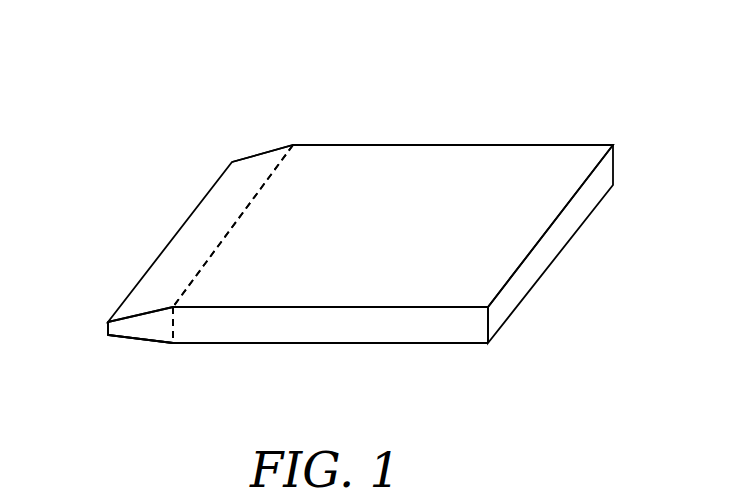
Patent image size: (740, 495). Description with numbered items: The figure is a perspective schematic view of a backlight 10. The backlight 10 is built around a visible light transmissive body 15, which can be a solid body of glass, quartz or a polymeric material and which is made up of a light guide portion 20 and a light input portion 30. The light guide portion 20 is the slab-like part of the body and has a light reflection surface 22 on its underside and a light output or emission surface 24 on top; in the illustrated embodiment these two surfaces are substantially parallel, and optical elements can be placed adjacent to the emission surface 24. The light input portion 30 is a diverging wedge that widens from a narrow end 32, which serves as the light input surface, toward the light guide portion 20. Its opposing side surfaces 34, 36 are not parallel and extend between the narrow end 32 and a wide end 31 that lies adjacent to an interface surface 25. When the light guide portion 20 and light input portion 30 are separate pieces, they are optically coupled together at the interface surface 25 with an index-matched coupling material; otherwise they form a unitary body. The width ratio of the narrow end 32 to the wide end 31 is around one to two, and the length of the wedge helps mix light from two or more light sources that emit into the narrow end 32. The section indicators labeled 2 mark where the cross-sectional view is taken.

The backlight 10 is at (472, 73).
The visible light transmissive body 15 is at (392, 145).
The light guide portion 20 is at (403, 362).
The light reflection surface 22 is at (473, 347).
The emission surface 24 is at (568, 162).
The interface surface 25 is at (268, 160).
The light input portion 30 is at (97, 353).
The wide end 31 is at (167, 325).
The narrow end 32 is at (108, 328).
The side surface 34 is at (238, 182).
The side surface 36 is at (139, 339).
The section line of FIG. 2 is at (170, 238).